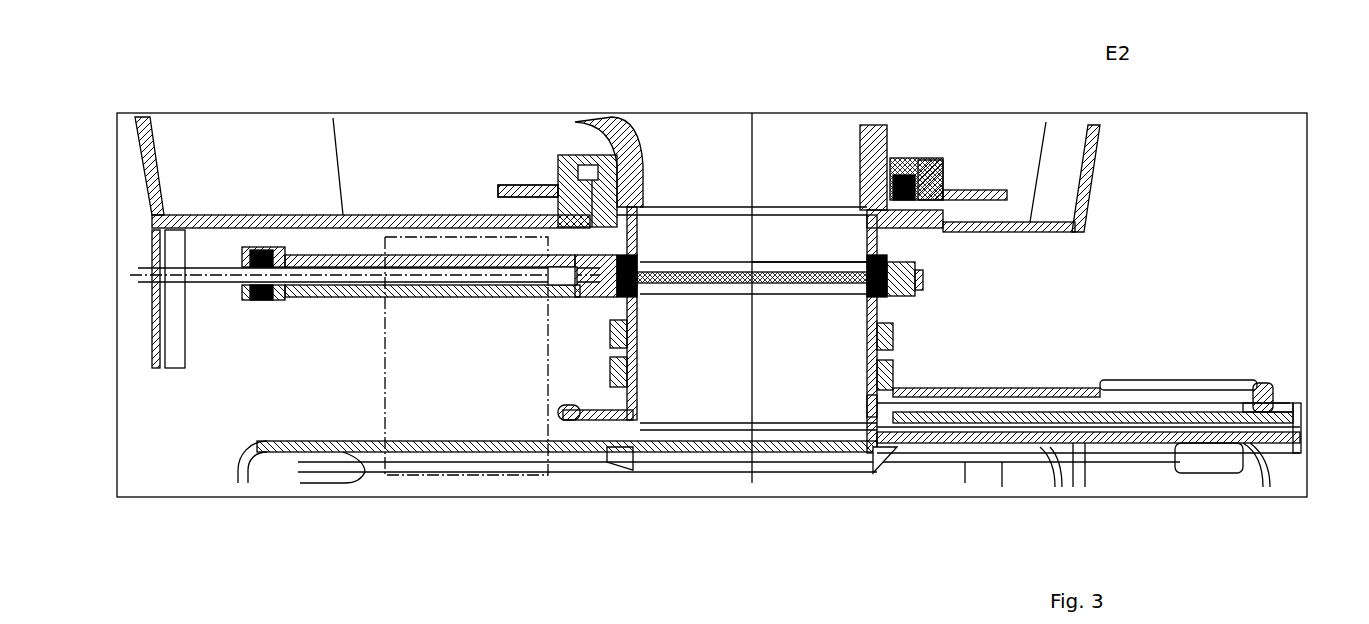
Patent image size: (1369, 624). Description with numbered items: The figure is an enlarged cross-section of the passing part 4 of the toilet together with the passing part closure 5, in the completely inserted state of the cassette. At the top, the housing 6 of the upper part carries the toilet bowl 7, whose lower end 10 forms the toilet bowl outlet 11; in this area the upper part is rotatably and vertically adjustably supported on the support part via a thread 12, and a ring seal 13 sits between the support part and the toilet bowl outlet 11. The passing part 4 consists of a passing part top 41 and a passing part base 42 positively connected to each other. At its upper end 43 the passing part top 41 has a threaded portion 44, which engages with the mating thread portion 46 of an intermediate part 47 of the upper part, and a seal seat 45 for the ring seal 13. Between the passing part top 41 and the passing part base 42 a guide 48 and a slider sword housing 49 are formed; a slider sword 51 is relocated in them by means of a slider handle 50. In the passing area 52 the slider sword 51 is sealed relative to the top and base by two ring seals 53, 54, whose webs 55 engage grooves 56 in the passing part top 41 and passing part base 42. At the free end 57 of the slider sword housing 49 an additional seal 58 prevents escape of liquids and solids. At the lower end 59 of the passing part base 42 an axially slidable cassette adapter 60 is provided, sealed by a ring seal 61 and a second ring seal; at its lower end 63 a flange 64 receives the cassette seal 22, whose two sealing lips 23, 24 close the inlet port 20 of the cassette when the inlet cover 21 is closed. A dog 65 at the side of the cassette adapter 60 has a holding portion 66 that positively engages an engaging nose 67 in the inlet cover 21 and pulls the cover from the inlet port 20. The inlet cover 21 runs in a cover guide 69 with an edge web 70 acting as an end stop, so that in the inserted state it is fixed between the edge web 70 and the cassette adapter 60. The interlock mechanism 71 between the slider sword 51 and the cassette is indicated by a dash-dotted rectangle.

The passing part 4 is at (930, 290).
The passing part closure 5 is at (363, 288).
The housing 6 is at (1090, 172).
The toilet bowl 7 is at (612, 157).
The lower end 10 is at (861, 192).
The toilet bowl outlet 11 is at (645, 200).
The thread 12 is at (945, 204).
The ring seal 13 is at (900, 182).
The inlet port 20 is at (790, 465).
The inlet cover 21 is at (1150, 443).
The cassette seal 22 is at (905, 450).
The sealing lip 23 is at (637, 422).
The sealing lip 24 is at (587, 423).
The passing part top 41 is at (918, 270).
The passing part base 42 is at (898, 300).
The upper end 43 is at (585, 195).
The threaded portion 44 is at (903, 185).
The seal seat 45 is at (637, 218).
The mating thread portion 46 is at (917, 185).
The intermediate part 47 is at (583, 190).
The guide 48 is at (728, 290).
The slider sword housing 49 is at (328, 260).
The slider handle 50 is at (152, 325).
The slider sword 51 is at (781, 284).
The passing area 52 is at (770, 261).
The ring seal 53 is at (868, 262).
The ring seal 54 is at (866, 300).
The web 55 is at (617, 300).
The groove 56 is at (620, 260).
The free end 57 is at (285, 297).
The additional seal 58 is at (257, 297).
The lower end 59 is at (637, 398).
The cassette adapter 60 is at (610, 373).
The ring seal 61 is at (620, 333).
The lower end 63 is at (863, 403).
The flange 64 is at (563, 422).
The dog 65 is at (1078, 390).
The holding portion 66 is at (1260, 400).
The engaging nose 67 is at (1233, 413).
The cover guide 69 is at (1073, 440).
The edge web 70 is at (1303, 418).
The interlock mechanism 71 is at (445, 473).